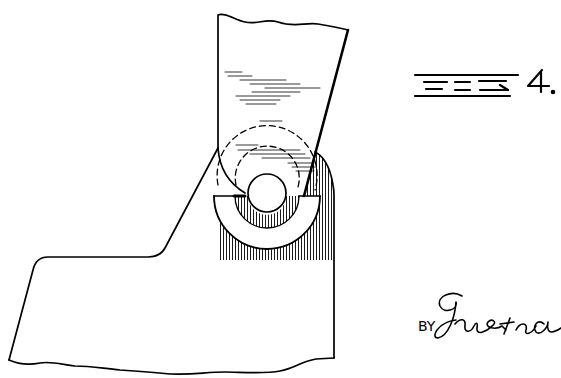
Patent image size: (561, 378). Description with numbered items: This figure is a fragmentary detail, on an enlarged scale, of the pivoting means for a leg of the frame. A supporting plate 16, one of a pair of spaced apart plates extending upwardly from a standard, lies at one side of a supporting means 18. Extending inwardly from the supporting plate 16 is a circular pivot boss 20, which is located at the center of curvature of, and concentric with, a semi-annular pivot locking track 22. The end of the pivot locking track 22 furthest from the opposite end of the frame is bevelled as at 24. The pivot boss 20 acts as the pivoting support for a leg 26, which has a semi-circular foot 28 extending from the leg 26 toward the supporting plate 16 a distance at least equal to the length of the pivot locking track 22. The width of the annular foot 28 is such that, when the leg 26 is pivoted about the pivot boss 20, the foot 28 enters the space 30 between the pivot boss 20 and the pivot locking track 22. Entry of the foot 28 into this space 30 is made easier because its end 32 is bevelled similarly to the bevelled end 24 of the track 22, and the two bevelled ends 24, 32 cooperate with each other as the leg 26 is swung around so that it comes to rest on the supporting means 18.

The supporting plate 16 is at (331, 177).
The supporting means 18 is at (101, 257).
The pivot boss 20 is at (282, 201).
The pivot locking track 22 is at (309, 226).
The bevelled end 24 is at (242, 196).
The leg 26 is at (334, 81).
The semi-circular foot 28 is at (240, 170).
The space 30 is at (251, 226).
The bevelled end 32 is at (237, 184).